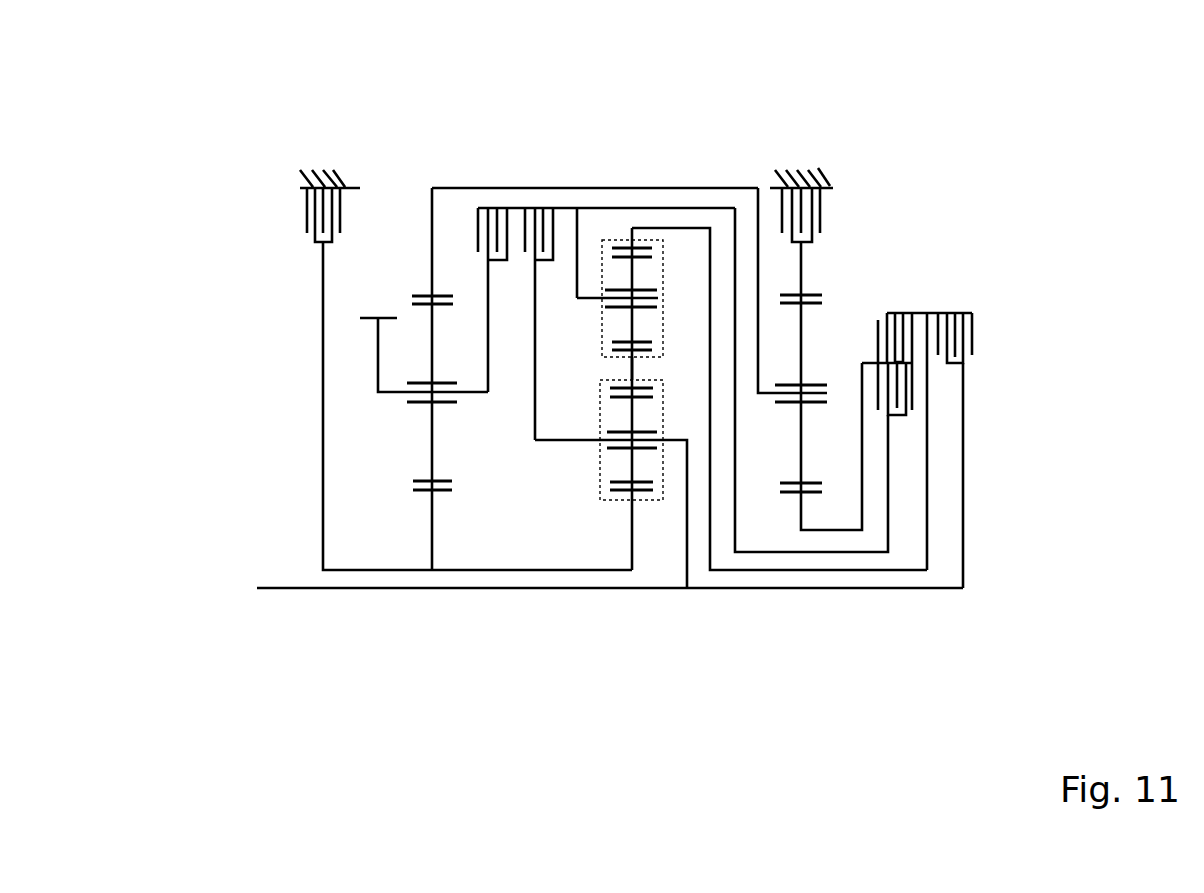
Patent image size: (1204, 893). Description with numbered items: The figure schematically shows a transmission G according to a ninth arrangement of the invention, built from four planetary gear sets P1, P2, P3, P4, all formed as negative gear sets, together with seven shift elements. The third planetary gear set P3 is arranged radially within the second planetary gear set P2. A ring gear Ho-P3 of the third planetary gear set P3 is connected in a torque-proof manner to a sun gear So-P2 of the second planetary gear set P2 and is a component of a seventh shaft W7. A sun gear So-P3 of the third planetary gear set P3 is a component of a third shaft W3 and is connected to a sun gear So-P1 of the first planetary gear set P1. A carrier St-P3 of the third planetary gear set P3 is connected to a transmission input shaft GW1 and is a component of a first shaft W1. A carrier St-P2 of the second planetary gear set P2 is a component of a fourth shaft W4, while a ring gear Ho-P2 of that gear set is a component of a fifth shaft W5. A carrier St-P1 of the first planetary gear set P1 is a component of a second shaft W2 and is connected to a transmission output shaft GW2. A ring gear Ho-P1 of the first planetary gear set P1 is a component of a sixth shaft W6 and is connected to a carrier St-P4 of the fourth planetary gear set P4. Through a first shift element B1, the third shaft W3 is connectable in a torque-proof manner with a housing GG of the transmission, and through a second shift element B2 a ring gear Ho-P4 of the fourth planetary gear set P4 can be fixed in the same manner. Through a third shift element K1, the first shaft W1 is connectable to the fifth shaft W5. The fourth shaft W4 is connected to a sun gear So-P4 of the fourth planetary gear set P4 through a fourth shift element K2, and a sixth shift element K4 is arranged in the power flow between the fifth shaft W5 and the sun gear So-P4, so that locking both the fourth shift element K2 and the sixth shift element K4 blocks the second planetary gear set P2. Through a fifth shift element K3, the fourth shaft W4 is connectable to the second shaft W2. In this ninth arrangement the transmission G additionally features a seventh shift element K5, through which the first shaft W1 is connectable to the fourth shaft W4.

The first shift element B1 is at (295, 221).
The second shift element B2 is at (835, 207).
The third shift element K1 is at (982, 333).
The fourth shift element K2 is at (922, 390).
The fifth shift element K3 is at (460, 224).
The sixth shift element K4 is at (912, 302).
The seventh shift element K5 is at (535, 199).
The transmission G is at (820, 146).
The housing GG is at (813, 170).
The transmission input shaft GW1 is at (293, 592).
The transmission output shaft GW2 is at (373, 317).
The first shaft W1 is at (964, 497).
The second shaft W2 is at (373, 371).
The third shaft W3 is at (322, 513).
The fourth shaft W4 is at (577, 245).
The fifth shaft W5 is at (928, 442).
The sixth shaft W6 is at (740, 205).
The seventh shaft W7 is at (660, 370).
The first planetary gear set P1 is at (432, 178).
The second planetary gear set P2 is at (608, 232).
The third planetary gear set P3 is at (608, 508).
The fourth planetary gear set P4 is at (802, 596).
The ring gear of the first planetary gear set Ho-P1 is at (420, 288).
The carrier of the first planetary gear set St-P1 is at (390, 397).
The sun gear of the first planetary gear set So-P1 is at (425, 496).
The ring gear of the second planetary gear set Ho-P2 is at (642, 247).
The carrier of the second planetary gear set St-P2 is at (588, 295).
The sun gear of the second planetary gear set So-P2 is at (610, 352).
The ring gear of the third planetary gear set Ho-P3 is at (643, 387).
The carrier of the third planetary gear set St-P3 is at (672, 444).
The sun gear of the third planetary gear set So-P3 is at (643, 498).
The ring gear of the fourth planetary gear set Ho-P4 is at (812, 292).
The carrier of the fourth planetary gear set St-P4 is at (767, 395).
The sun gear of the fourth planetary gear set So-P4 is at (810, 496).